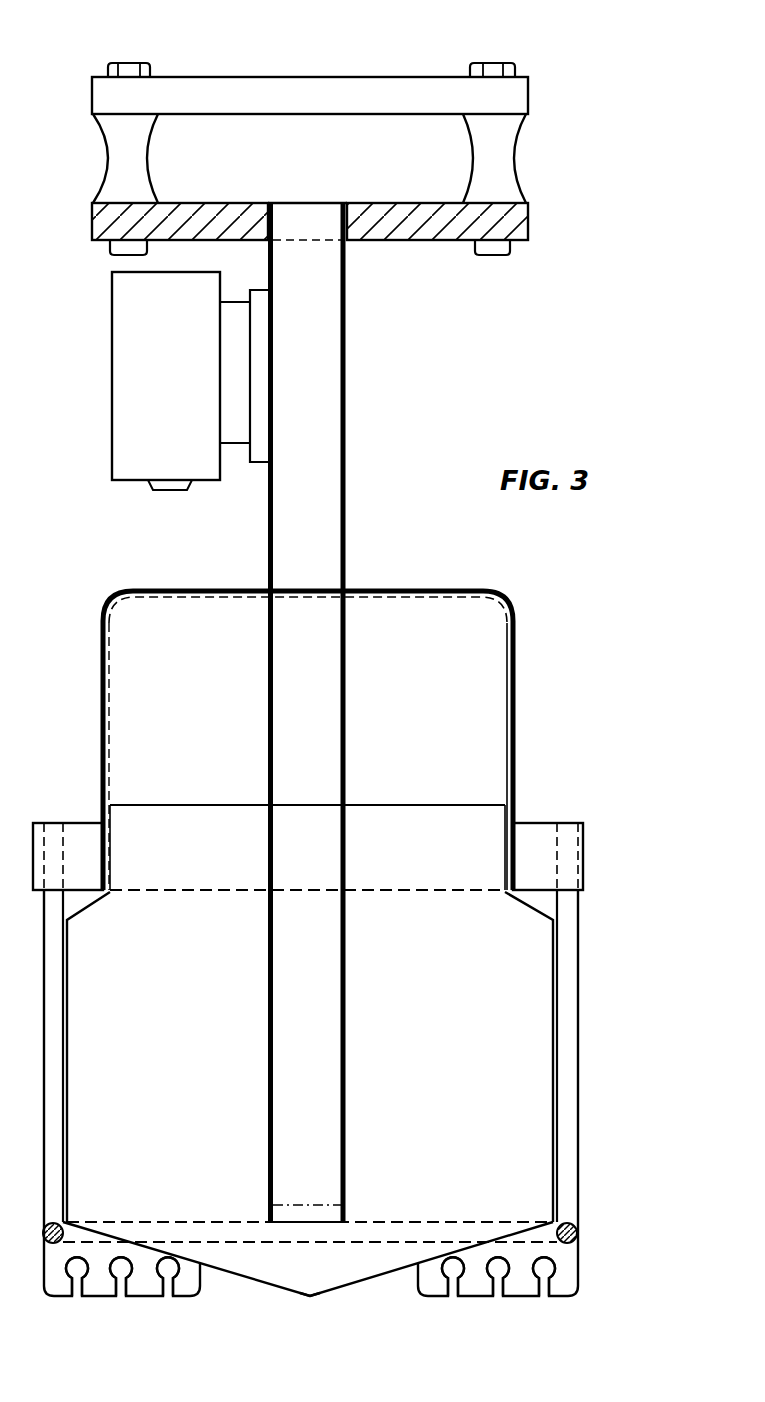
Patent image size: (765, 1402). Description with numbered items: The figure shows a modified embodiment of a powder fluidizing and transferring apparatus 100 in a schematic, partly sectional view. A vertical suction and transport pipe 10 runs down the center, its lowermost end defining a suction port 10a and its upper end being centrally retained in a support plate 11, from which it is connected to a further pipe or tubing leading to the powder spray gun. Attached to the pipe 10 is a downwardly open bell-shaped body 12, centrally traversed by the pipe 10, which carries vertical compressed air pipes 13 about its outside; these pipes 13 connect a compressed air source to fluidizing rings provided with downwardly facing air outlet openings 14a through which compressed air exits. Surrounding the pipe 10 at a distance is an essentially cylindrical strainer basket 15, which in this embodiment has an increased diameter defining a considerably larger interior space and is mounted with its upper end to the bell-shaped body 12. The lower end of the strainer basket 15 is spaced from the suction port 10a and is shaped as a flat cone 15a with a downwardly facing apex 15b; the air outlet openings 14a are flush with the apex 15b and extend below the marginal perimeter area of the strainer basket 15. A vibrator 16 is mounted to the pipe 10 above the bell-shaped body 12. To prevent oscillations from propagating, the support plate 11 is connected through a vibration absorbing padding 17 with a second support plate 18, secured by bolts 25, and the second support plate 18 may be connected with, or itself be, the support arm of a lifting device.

The powder fluidizing and transferring apparatus 100 is at (470, 357).
The vertical suction and transport pipe 10 is at (320, 413).
The suction port 10a is at (328, 1222).
The support plate 11 is at (412, 226).
The bell-shaped body 12 is at (513, 713).
The compressed air pipes 13 is at (567, 1092).
The air outlet openings 14a is at (120, 1292).
The strainer basket 15 is at (523, 968).
The cone 15a is at (273, 1290).
The apex 15b is at (311, 1297).
The vibrator 16 is at (130, 395).
The vibration absorbing padding 17 is at (503, 173).
The second support plate 18 is at (503, 95).
The bolts 25 is at (497, 62).